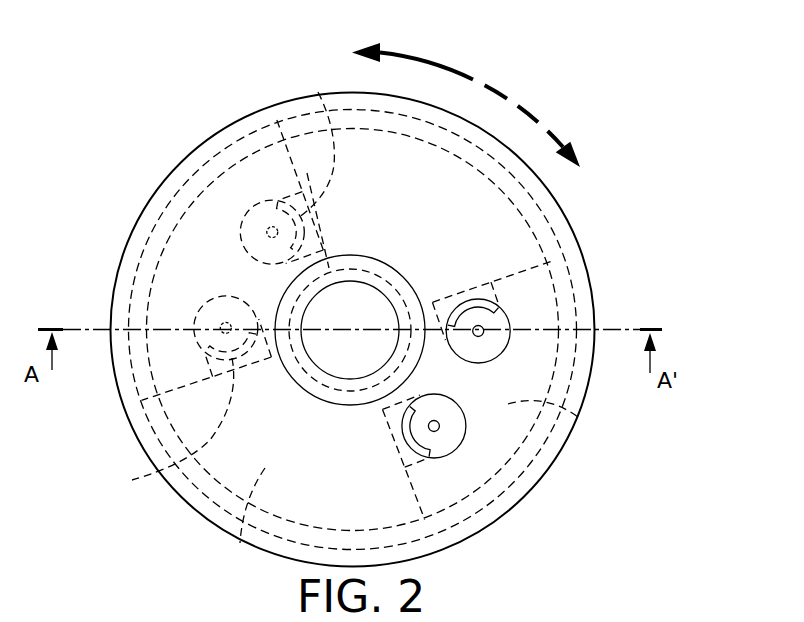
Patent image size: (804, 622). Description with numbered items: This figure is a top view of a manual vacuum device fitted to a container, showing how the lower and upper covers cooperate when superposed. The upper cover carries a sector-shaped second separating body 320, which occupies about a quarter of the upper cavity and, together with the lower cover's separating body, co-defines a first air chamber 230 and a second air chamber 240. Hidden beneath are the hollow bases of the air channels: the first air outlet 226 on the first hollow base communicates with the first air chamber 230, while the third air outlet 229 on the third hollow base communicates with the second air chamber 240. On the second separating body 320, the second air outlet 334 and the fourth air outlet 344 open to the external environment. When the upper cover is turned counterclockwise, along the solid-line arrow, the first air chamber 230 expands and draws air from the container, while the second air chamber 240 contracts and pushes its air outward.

The second air chamber 240 is at (558, 202).
The fourth air outlet 344 is at (478, 331).
The second air outlet 334 is at (434, 426).
The first air outlet 226 is at (132, 480).
The third air outlet 229 is at (318, 92).
The first air chamber 230 is at (240, 543).
The second separating body 320 is at (578, 417).